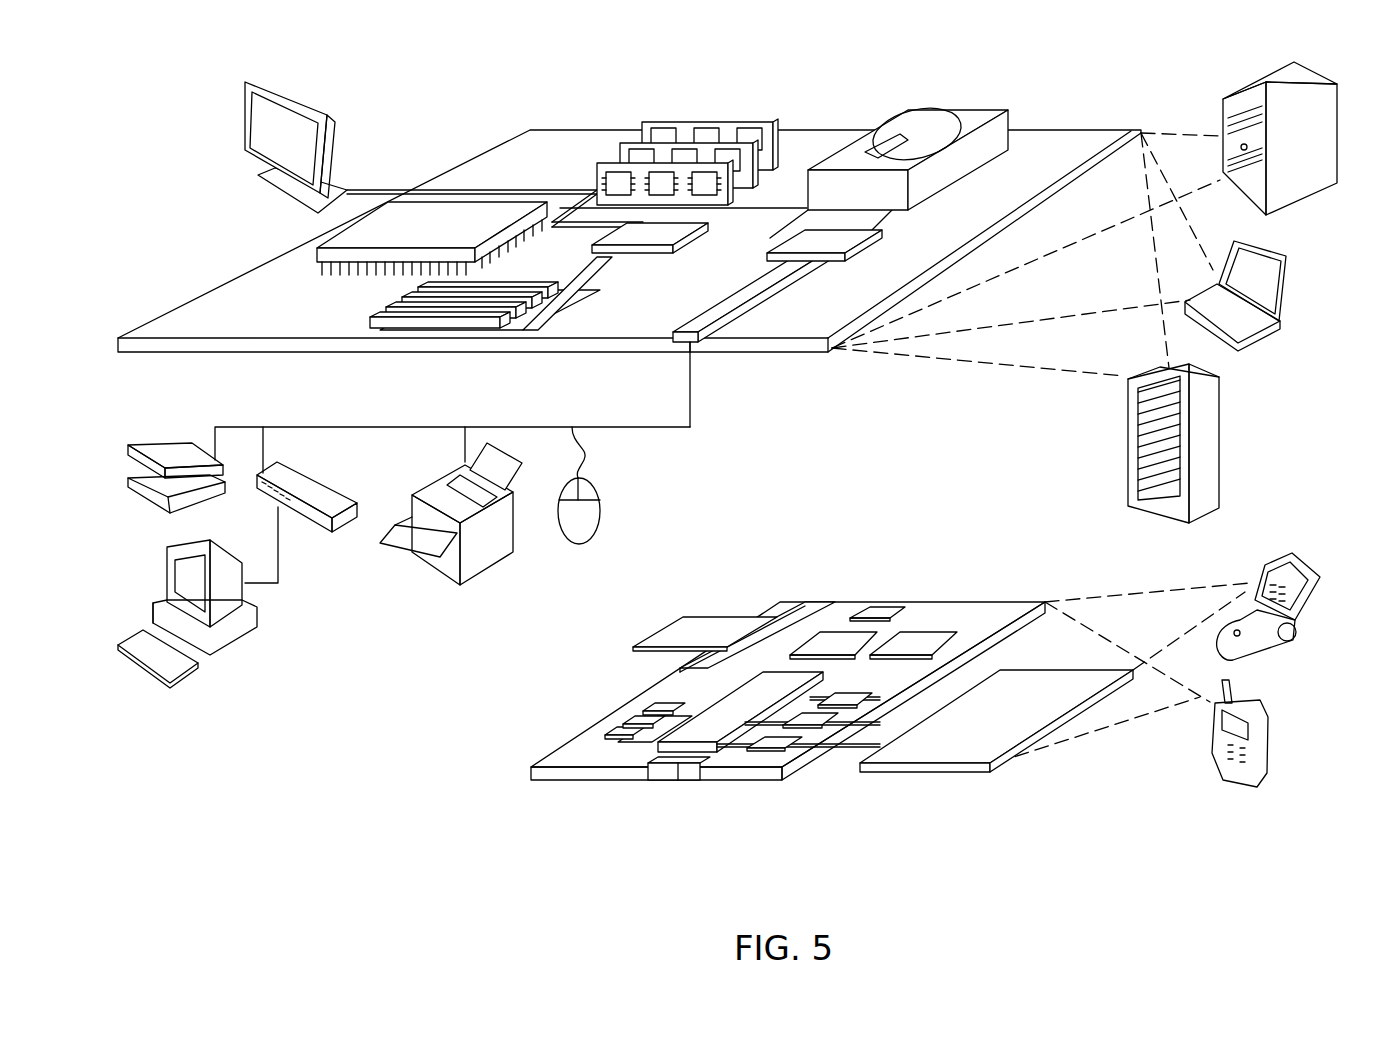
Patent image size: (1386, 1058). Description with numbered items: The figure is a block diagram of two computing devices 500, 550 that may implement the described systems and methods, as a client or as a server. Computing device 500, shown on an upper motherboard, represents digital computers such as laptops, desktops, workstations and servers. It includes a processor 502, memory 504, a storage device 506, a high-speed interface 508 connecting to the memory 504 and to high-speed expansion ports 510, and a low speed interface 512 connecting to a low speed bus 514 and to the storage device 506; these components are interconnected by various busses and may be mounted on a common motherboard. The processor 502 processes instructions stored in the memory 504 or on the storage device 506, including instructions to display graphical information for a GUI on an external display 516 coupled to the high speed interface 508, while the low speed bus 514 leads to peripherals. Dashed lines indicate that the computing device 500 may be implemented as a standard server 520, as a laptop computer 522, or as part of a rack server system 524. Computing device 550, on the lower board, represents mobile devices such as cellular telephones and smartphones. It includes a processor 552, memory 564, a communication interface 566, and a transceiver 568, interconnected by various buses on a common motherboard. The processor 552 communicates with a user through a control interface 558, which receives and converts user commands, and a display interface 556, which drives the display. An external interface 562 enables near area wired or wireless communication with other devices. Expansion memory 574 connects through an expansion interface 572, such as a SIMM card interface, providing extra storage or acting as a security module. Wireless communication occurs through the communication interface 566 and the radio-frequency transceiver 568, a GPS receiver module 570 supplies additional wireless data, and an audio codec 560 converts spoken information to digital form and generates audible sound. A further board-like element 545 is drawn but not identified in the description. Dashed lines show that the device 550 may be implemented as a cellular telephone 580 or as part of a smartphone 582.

The computing device 500 is at (450, 98).
The processor 502 is at (322, 250).
The memory 504 is at (660, 125).
The storage device 506 is at (900, 124).
The high-speed interface 508 is at (627, 235).
The high-speed expansion ports 510 is at (375, 322).
The low speed interface 512 is at (800, 236).
The low speed bus 514 is at (700, 343).
The display 516 is at (258, 82).
The standard server 520 is at (1223, 112).
The laptop computer 522 is at (1290, 262).
The rack server system 524 is at (1128, 470).
The display board 545 is at (958, 752).
The computing device 550 is at (500, 779).
The processor 552 is at (712, 735).
The display interface 556 is at (790, 748).
The control interface 558 is at (818, 722).
The audio codec 560 is at (845, 705).
The external interface 562 is at (678, 770).
The memory 564 is at (625, 727).
The communication interface 566 is at (835, 640).
The transceiver 568 is at (915, 640).
The GPS receiver module 570 is at (888, 603).
The expansion interface 572 is at (762, 615).
The expansion memory 574 is at (686, 618).
The cellular telephone 580 is at (1274, 530).
The smartphone 582 is at (1213, 725).